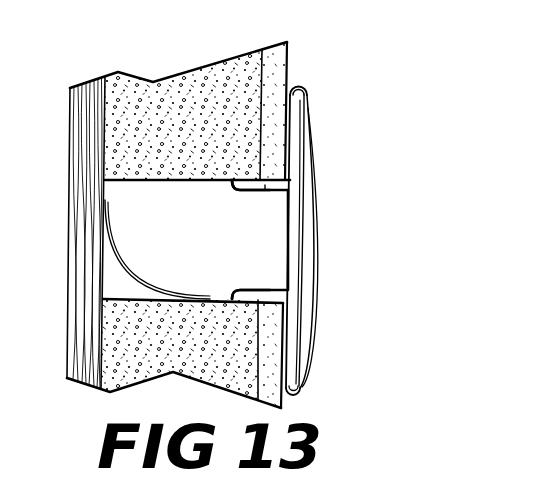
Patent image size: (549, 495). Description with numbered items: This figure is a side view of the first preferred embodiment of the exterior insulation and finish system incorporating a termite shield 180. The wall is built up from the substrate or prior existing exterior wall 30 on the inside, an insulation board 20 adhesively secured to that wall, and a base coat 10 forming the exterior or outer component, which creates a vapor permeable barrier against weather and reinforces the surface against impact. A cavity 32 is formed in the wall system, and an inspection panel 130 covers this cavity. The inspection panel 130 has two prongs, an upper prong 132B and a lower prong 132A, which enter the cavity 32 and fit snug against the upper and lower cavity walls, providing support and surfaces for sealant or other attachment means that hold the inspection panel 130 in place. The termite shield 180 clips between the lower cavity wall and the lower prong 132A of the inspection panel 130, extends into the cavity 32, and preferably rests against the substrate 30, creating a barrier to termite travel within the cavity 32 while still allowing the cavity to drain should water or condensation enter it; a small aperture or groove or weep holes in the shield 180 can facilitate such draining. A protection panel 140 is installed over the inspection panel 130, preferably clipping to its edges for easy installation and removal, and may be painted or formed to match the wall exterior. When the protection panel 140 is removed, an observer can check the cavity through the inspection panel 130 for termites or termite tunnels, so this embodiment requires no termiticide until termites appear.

The base coat 10 is at (273, 51).
The insulation board 20 is at (191, 71).
The exterior wall 30 is at (93, 79).
The cavity 32 is at (261, 238).
The inspection panel 130 is at (300, 208).
The lower prong 132A is at (266, 290).
The upper prong 132B is at (265, 190).
The protection panel 140 is at (317, 302).
The termite shield 180 is at (118, 264).